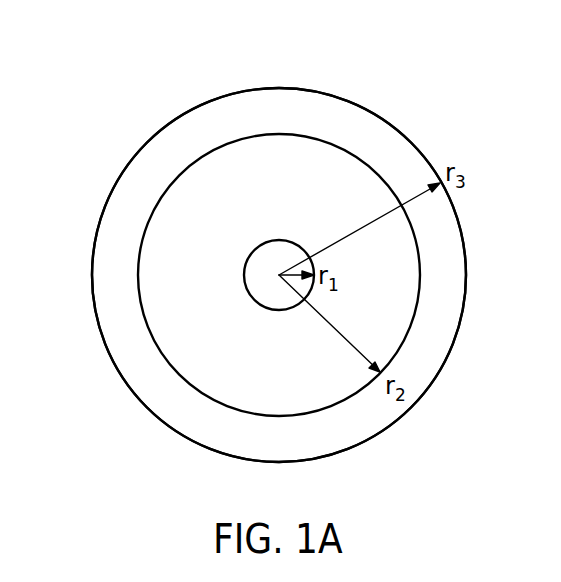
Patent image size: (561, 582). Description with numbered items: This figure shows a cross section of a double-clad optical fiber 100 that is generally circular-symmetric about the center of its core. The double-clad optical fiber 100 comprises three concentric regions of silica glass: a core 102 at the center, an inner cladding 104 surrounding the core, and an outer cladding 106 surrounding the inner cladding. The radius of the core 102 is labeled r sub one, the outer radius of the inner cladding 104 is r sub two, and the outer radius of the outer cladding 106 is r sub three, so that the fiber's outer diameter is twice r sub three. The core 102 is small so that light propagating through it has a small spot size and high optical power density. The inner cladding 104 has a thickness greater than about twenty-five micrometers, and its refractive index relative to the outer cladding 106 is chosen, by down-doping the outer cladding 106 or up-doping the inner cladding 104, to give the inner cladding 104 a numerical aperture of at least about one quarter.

The double-clad optical fiber 100 is at (153, 88).
The core 102 is at (246, 283).
The inner cladding 104 is at (150, 203).
The outer cladding 106 is at (379, 118).